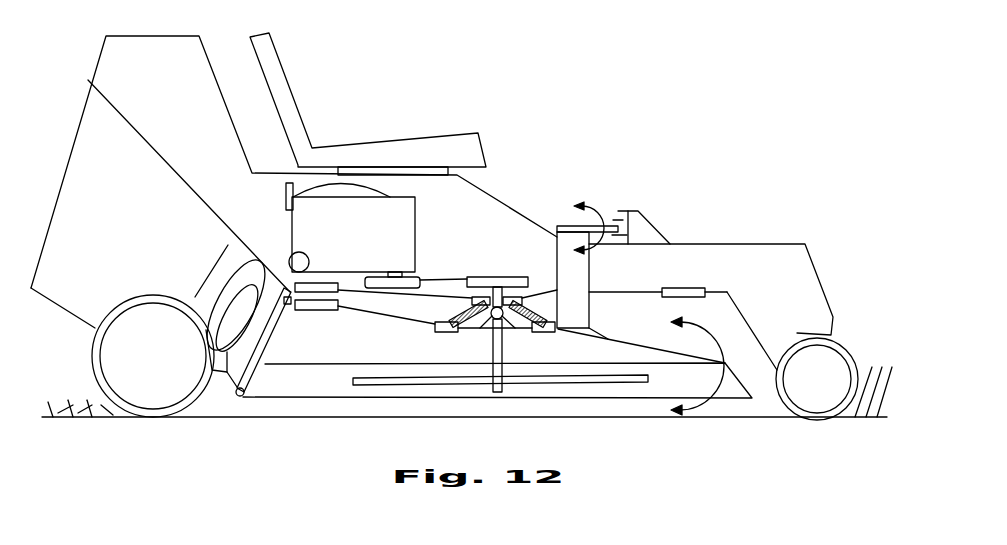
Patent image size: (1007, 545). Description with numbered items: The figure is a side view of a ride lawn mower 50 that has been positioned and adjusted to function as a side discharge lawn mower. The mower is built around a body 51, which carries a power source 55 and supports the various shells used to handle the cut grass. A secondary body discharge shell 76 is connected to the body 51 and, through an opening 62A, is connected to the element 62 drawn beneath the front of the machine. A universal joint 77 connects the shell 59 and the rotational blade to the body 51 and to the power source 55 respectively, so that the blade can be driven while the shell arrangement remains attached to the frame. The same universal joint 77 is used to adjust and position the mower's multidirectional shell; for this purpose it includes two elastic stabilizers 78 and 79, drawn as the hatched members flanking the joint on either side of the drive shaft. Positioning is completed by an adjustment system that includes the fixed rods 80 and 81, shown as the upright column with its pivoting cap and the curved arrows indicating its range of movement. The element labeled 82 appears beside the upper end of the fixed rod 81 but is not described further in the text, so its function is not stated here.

The ride lawn mower 50 is at (684, 70).
The body 51 is at (494, 197).
The power source 55 is at (345, 217).
The shell 59 is at (582, 400).
The connecting element 62 is at (282, 328).
The opening 62A is at (248, 367).
The secondary body discharge shell 76 is at (211, 384).
The universal joint 77 is at (508, 316).
The elastic stabilizer 78 is at (463, 312).
The elastic stabilizer 79 is at (543, 293).
The fixed rod 80 is at (589, 273).
The fixed rod 81 is at (565, 227).
The control handle 82 is at (655, 218).